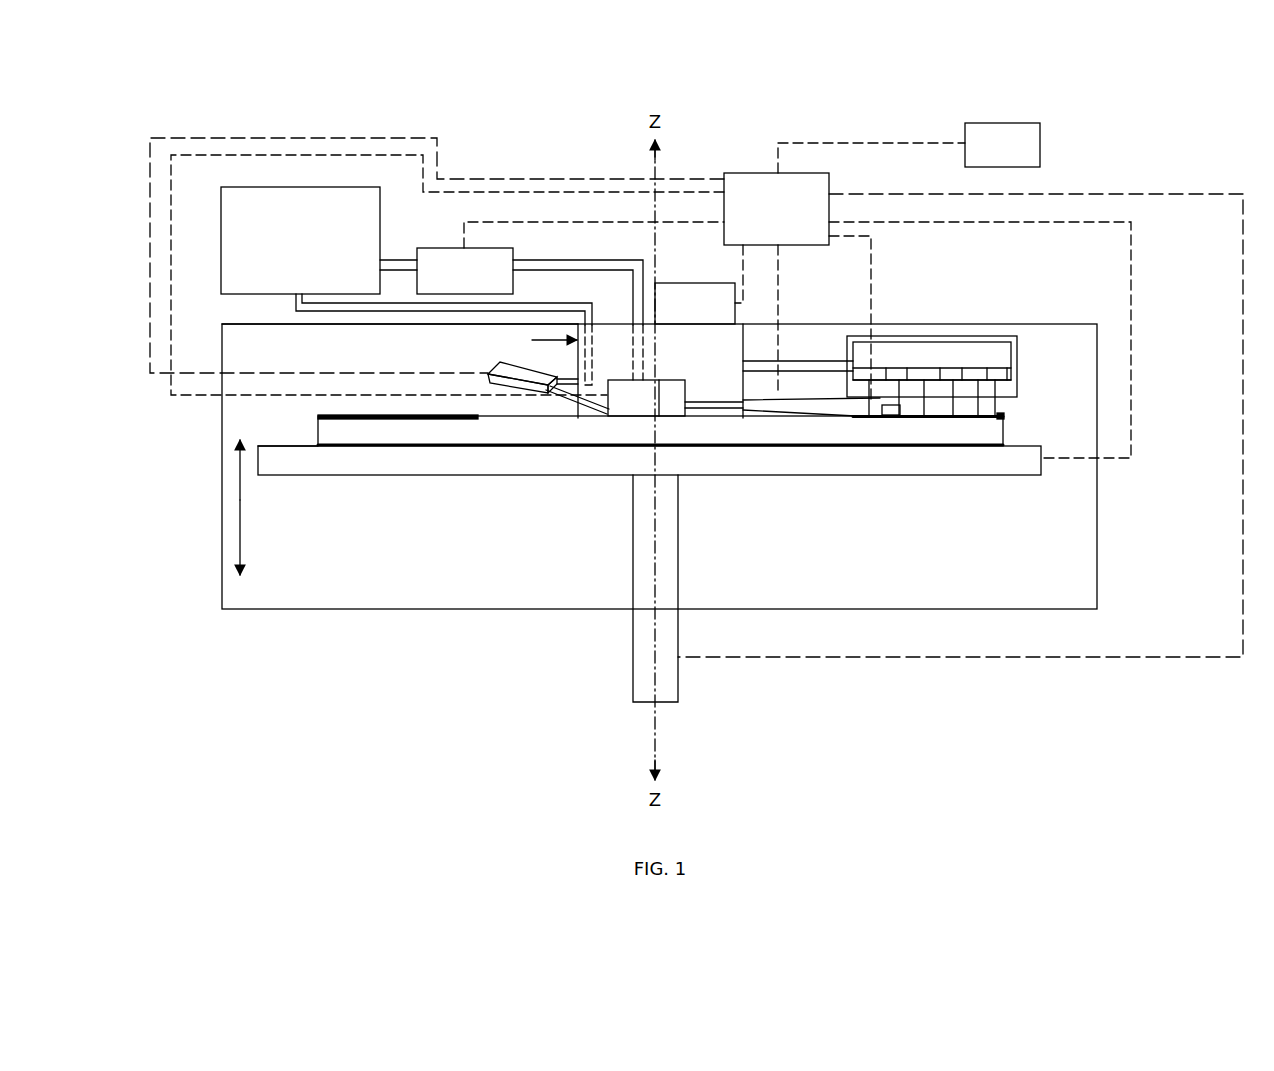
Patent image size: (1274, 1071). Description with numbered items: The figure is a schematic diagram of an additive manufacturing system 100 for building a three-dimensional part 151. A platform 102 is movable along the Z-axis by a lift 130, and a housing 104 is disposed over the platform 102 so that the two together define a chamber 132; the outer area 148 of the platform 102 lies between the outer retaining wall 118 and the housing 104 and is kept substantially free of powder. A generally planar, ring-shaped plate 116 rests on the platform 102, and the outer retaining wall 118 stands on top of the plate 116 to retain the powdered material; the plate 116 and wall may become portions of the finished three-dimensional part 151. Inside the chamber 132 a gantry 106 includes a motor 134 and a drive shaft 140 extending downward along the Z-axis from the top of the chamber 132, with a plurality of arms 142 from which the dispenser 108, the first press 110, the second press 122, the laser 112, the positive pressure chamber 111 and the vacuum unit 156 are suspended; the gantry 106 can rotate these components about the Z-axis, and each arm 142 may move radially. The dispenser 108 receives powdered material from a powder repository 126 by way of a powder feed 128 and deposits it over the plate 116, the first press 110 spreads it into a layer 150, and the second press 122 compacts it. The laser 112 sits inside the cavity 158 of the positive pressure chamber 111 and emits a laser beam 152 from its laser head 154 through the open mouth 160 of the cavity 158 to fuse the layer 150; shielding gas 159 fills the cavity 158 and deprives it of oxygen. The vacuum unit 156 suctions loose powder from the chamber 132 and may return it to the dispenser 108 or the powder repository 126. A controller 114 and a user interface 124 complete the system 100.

The system 100 is at (235, 85).
The platform 102 is at (370, 463).
The housing 104 is at (222, 368).
The gantry 106 is at (532, 340).
The dispenser 108 is at (657, 537).
The first press 110 is at (671, 408).
The positive pressure chamber 111 is at (1021, 406).
The laser 112 is at (1002, 360).
The controller 114 is at (776, 209).
The plate 116 is at (457, 443).
The outer retaining wall 118 is at (660, 430).
The second press 122 is at (802, 407).
The user interface 124 is at (1002, 145).
The powder repository 126 is at (300, 240).
The powder feed 128 is at (465, 271).
The lift 130 is at (647, 629).
The chamber 132 is at (254, 353).
The motor 134 is at (695, 303).
The drive shaft 140 is at (709, 390).
The arms 142 is at (800, 369).
The outer area 148 is at (280, 430).
The layer 150 is at (1005, 417).
The 3D part 151 is at (342, 415).
The laser beam 152 is at (997, 405).
The laser head 154 is at (973, 372).
The vacuum unit 156 is at (497, 364).
The cavity 158 is at (1015, 390).
The shielding gas 159 is at (1010, 385).
The mouth 160 is at (987, 397).